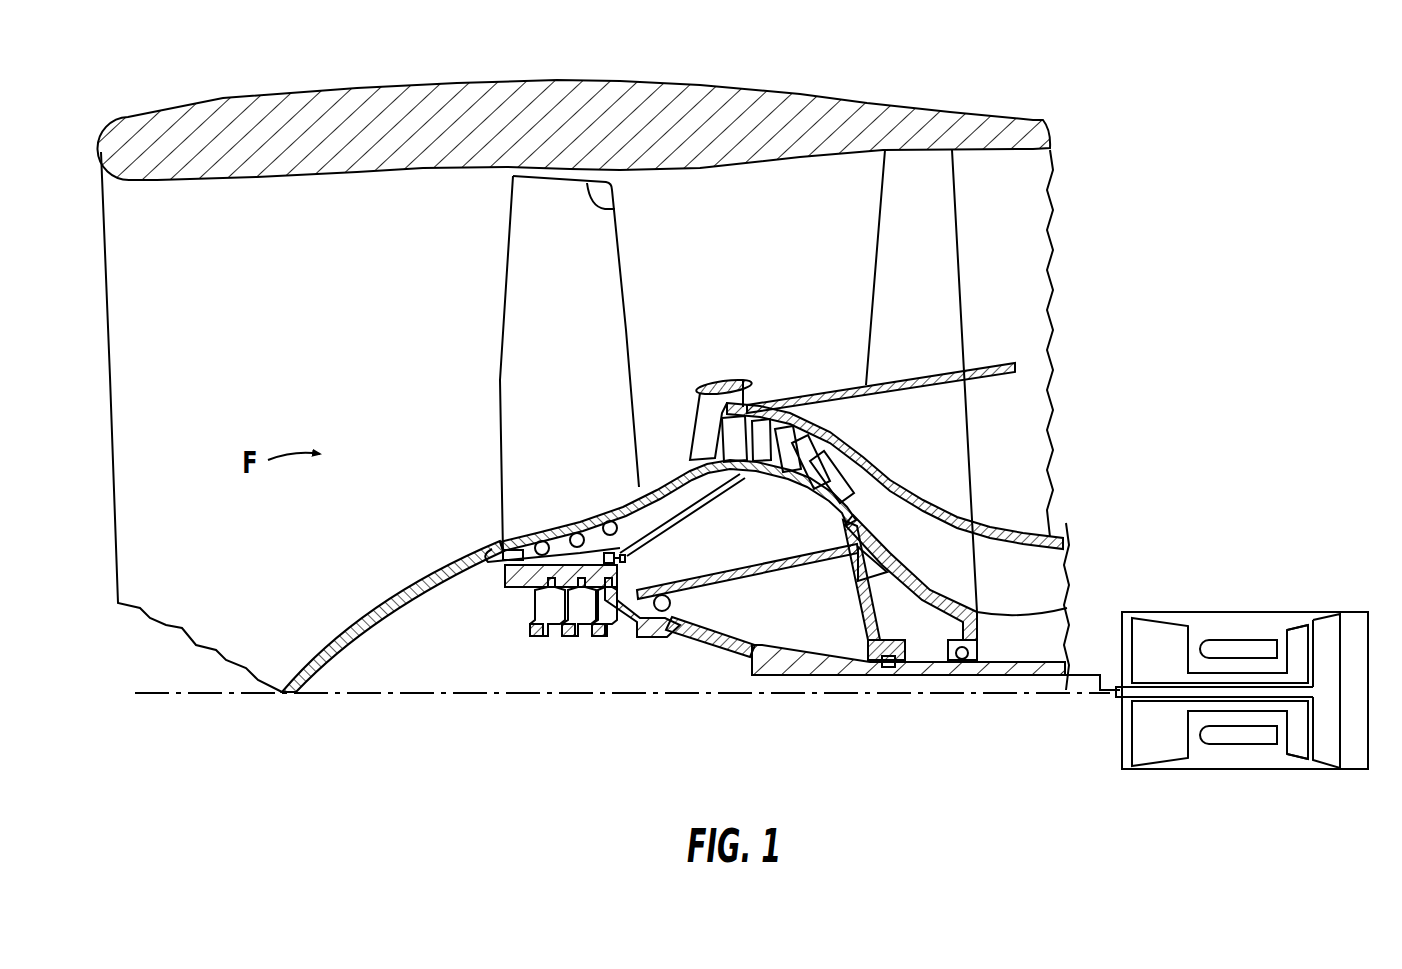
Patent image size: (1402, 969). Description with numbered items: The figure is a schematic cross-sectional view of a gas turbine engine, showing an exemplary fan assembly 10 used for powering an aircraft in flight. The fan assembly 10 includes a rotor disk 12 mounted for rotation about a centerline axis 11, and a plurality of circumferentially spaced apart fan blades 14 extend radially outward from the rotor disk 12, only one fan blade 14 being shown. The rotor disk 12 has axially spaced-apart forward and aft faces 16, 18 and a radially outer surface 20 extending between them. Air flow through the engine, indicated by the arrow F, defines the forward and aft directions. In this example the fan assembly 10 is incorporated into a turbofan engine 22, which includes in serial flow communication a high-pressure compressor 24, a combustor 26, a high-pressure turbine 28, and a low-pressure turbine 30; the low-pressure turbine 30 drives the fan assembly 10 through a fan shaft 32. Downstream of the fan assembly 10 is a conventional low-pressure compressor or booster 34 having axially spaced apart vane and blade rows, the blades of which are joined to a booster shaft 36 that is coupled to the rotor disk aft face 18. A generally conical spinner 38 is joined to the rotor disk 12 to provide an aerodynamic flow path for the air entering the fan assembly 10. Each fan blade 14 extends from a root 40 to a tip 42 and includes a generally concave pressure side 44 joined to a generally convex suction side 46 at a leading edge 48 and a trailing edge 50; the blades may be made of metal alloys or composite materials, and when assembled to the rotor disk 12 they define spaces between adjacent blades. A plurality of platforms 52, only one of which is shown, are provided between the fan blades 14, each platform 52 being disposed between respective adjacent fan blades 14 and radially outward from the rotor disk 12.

The fan assembly 10 is at (306, 233).
The centerline axis 11 is at (170, 697).
The rotor disk 12 is at (533, 620).
The fan blade 14 is at (563, 364).
The forward face 16 is at (497, 578).
The aft face 18 is at (618, 576).
The radially outer surface 20 is at (592, 553).
The turbofan engine 22 is at (1090, 152).
The high-pressure compressor 24 is at (1150, 628).
The combustor 26 is at (1210, 648).
The high-pressure turbine 28 is at (1300, 630).
The low-pressure turbine 30 is at (1335, 625).
The fan shaft 32 is at (797, 652).
The booster 34 is at (738, 432).
The booster shaft 36 is at (828, 504).
The spinner 38 is at (350, 624).
The root 40 is at (540, 533).
The tip 42 is at (615, 209).
The pressure side 44 is at (585, 386).
The suction side 46 is at (535, 370).
The leading edge 48 is at (501, 318).
The trailing edge 50 is at (640, 330).
The platform 52 is at (625, 515).